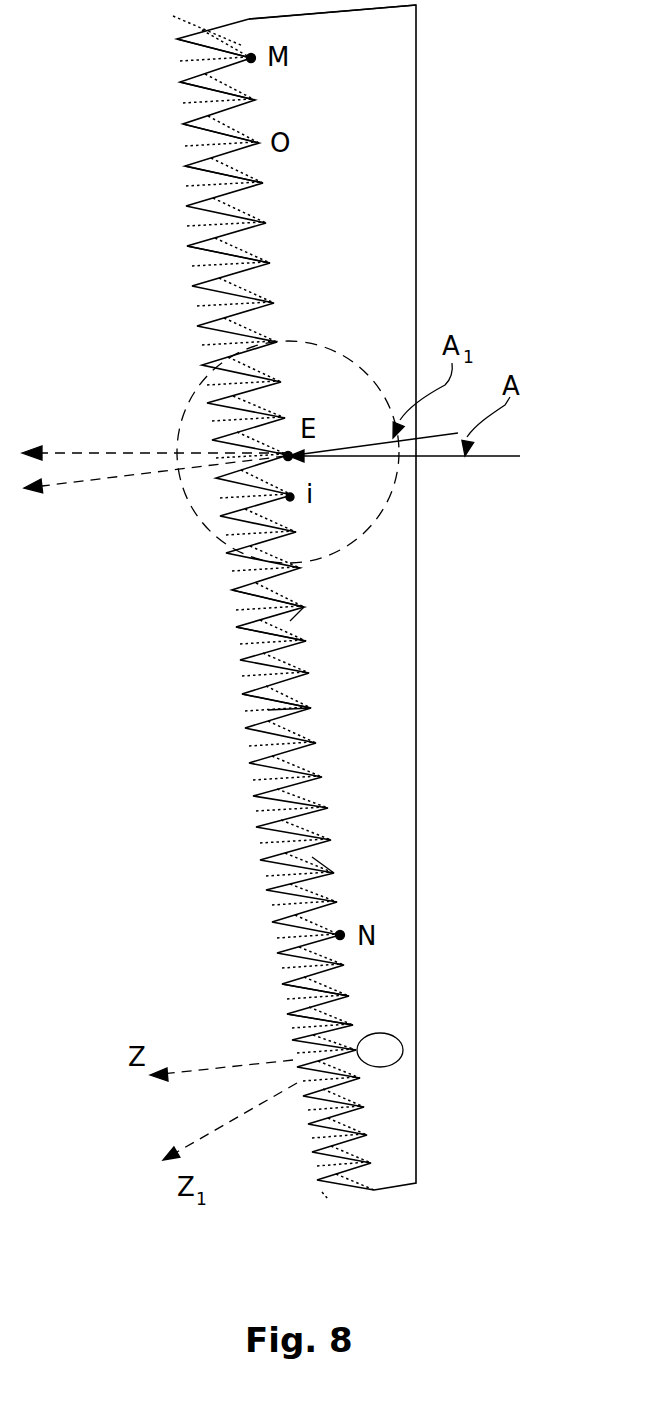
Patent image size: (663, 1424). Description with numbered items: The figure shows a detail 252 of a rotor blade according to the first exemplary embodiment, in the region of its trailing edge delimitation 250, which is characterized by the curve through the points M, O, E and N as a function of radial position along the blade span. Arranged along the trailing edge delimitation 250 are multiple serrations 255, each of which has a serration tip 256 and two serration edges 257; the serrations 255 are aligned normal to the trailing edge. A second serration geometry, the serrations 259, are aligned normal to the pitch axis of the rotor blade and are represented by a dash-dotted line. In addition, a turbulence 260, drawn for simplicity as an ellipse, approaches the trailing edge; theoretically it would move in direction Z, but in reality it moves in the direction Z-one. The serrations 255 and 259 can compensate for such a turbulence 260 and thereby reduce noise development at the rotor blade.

The trailing edge delimitation 250 is at (277, 115).
The detail 252 is at (400, 868).
The serrations 255 is at (214, 316).
The serration tip 256 is at (184, 160).
The serration edges 257 is at (247, 605).
The serrations 259 is at (238, 210).
The turbulence 260 is at (393, 1037).